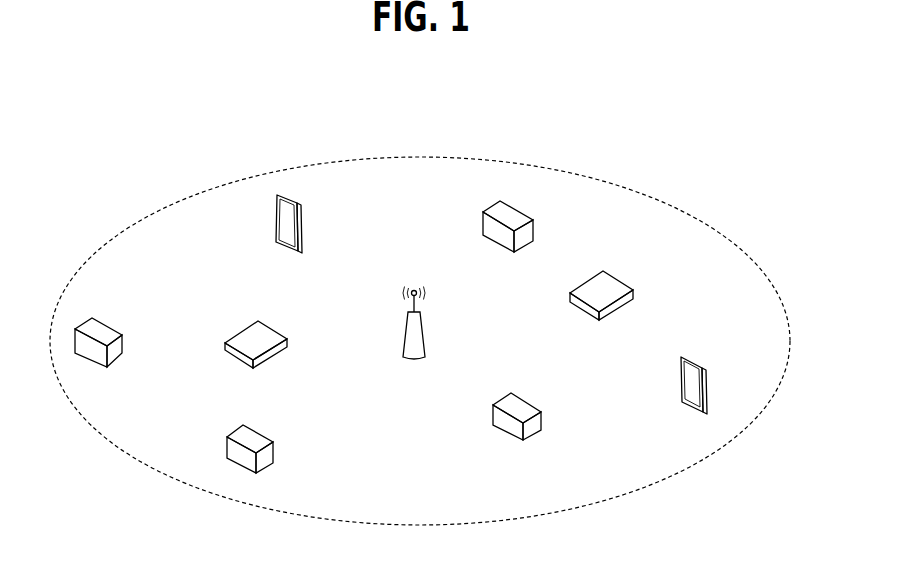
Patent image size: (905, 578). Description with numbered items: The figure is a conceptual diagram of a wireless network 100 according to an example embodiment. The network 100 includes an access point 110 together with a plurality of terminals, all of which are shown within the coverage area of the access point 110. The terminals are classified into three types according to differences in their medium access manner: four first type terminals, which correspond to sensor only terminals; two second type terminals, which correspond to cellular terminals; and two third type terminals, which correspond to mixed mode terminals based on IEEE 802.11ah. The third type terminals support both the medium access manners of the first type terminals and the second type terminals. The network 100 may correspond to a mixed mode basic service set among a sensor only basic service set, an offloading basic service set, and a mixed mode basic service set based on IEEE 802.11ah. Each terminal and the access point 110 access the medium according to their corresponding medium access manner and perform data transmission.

The network 100 is at (452, 135).
The access point 110 is at (425, 330).